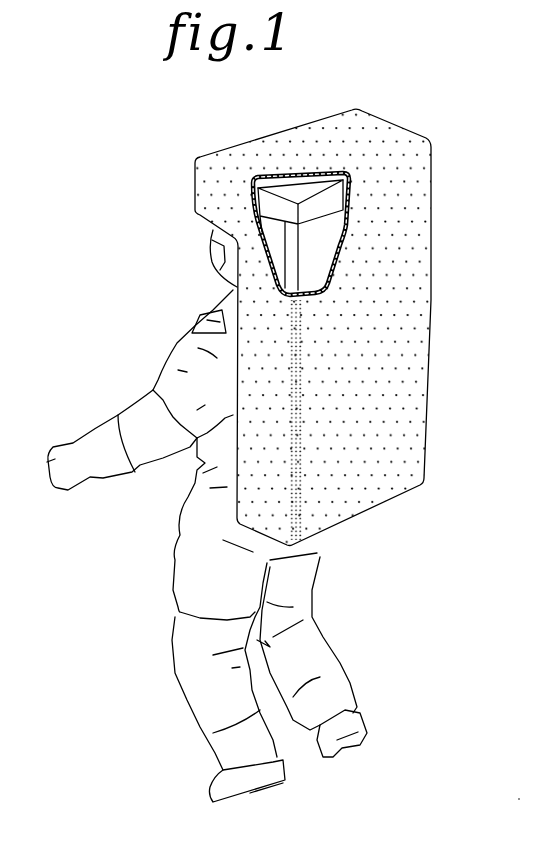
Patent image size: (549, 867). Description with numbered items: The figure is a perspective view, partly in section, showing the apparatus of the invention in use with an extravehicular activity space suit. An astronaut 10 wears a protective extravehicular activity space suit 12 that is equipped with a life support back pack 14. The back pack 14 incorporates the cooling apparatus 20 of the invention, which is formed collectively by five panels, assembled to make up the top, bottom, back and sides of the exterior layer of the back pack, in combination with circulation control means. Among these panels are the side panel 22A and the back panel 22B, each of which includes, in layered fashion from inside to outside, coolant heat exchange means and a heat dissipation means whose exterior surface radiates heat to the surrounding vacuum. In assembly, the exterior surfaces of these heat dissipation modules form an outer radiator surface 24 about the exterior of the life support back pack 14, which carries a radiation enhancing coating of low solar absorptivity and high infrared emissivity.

The astronaut 10 is at (133, 289).
The extravehicular activity space suit 12 is at (178, 567).
The life support back pack 14 is at (434, 233).
The cooling apparatus 20 is at (403, 343).
The side panel 22A is at (272, 231).
The back panel 22B is at (318, 247).
The outer radiator surface 24 is at (363, 487).